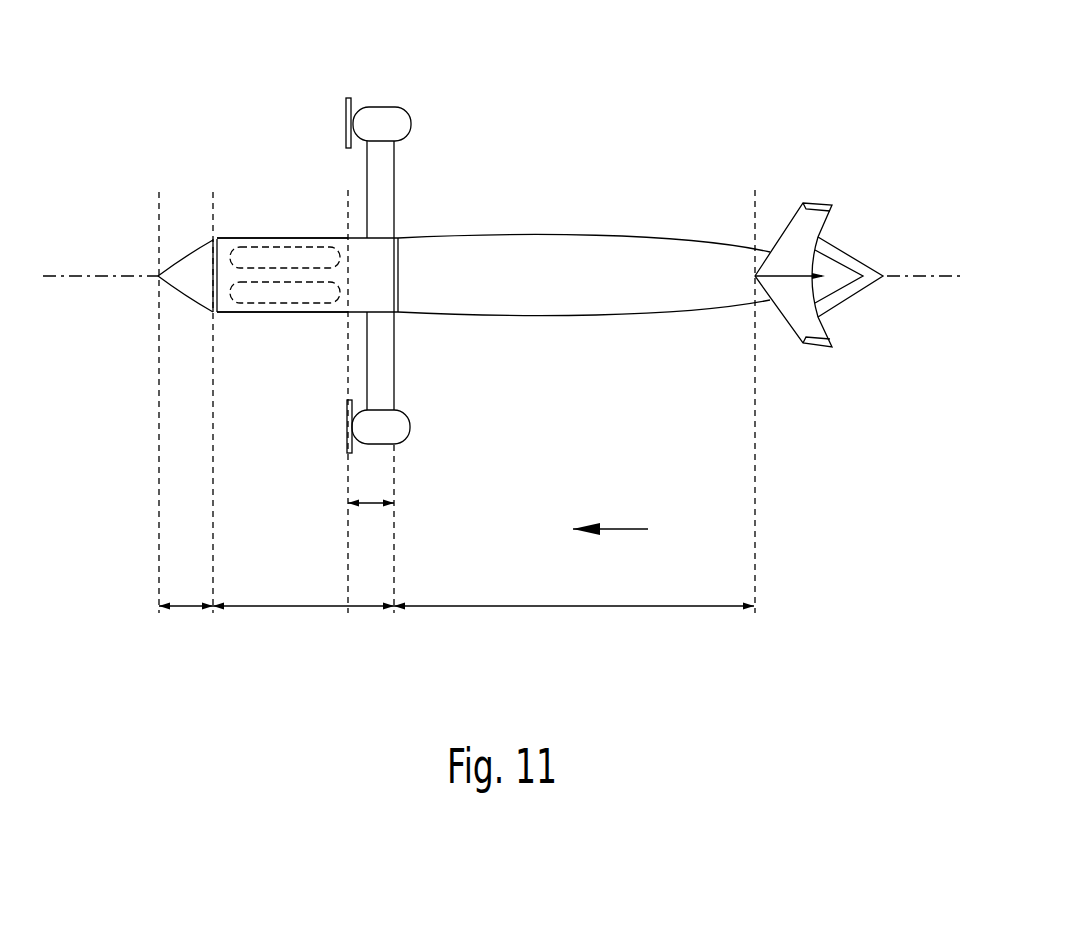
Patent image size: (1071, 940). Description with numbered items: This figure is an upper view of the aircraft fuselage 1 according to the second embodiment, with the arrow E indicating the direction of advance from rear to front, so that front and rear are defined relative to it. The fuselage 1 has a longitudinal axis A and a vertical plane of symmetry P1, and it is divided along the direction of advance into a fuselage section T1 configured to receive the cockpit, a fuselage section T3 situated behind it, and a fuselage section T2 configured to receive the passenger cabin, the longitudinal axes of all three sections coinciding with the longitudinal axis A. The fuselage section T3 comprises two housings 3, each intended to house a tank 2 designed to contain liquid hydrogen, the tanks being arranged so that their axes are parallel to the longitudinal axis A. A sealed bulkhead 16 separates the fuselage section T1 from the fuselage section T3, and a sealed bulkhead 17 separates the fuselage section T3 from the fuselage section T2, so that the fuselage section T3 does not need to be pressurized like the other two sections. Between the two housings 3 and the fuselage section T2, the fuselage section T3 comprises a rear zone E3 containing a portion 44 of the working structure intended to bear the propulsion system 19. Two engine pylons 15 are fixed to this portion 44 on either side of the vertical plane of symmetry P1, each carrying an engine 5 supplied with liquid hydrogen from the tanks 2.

The fuselage 1 is at (612, 140).
The tank 2 is at (279, 250).
The housing 3 is at (267, 226).
The engine 5 is at (385, 113).
The engine pylon 15 is at (394, 173).
The sealed bulkhead 16 is at (222, 262).
The sealed bulkhead 17 is at (398, 275).
The propulsion system 19 is at (464, 95).
The portion of the working structure 44 is at (373, 263).
The longitudinal axis A is at (75, 278).
The arrow indicating direction of advance E is at (610, 513).
The rear zone E3 is at (398, 295).
The vertical plane of symmetry P1 is at (913, 266).
The fuselage section T1 is at (187, 610).
The fuselage section T2 is at (592, 610).
The fuselage section T3 is at (303, 610).